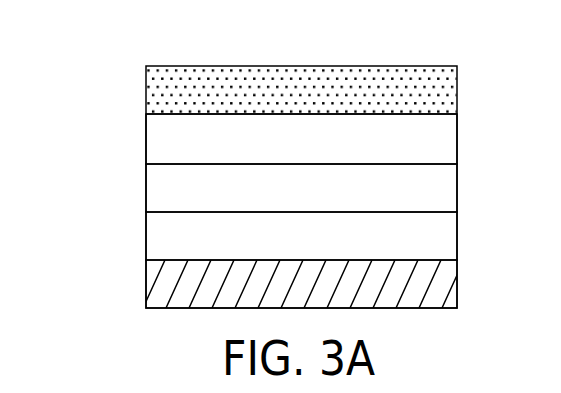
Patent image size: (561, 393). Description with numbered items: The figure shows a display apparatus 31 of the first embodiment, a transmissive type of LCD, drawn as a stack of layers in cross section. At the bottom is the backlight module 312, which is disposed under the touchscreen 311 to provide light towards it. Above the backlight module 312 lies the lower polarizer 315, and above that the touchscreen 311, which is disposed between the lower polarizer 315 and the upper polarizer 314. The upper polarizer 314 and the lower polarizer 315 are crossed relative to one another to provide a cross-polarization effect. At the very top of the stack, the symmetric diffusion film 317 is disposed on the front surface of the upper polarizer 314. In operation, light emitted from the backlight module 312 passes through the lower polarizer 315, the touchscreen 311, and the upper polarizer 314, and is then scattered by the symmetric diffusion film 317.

The display apparatus 31 is at (44, 49).
The symmetric diffusion film 317 is at (457, 89).
The upper polarizer 314 is at (457, 137).
The touchscreen 311 is at (457, 183).
The lower polarizer 315 is at (457, 233).
The backlight module 312 is at (457, 282).